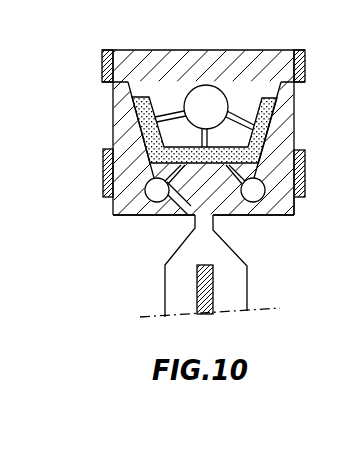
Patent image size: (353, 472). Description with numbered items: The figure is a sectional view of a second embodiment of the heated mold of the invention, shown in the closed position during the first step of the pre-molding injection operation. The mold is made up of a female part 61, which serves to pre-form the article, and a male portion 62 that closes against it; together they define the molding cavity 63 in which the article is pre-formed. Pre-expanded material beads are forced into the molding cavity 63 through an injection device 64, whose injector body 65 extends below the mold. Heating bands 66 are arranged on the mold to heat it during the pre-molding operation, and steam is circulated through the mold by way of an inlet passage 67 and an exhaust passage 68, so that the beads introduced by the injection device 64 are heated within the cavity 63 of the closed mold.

The female part of the heated mold 61 is at (292, 200).
The male portion of the mold 62 is at (275, 60).
The molding cavity 63 is at (139, 125).
The injection device 64 is at (186, 215).
The injector body 65 is at (233, 290).
The heating bands 66 is at (102, 70).
The inlet passage for steam 67 is at (253, 190).
The exhaust passage for steam 68 is at (213, 102).